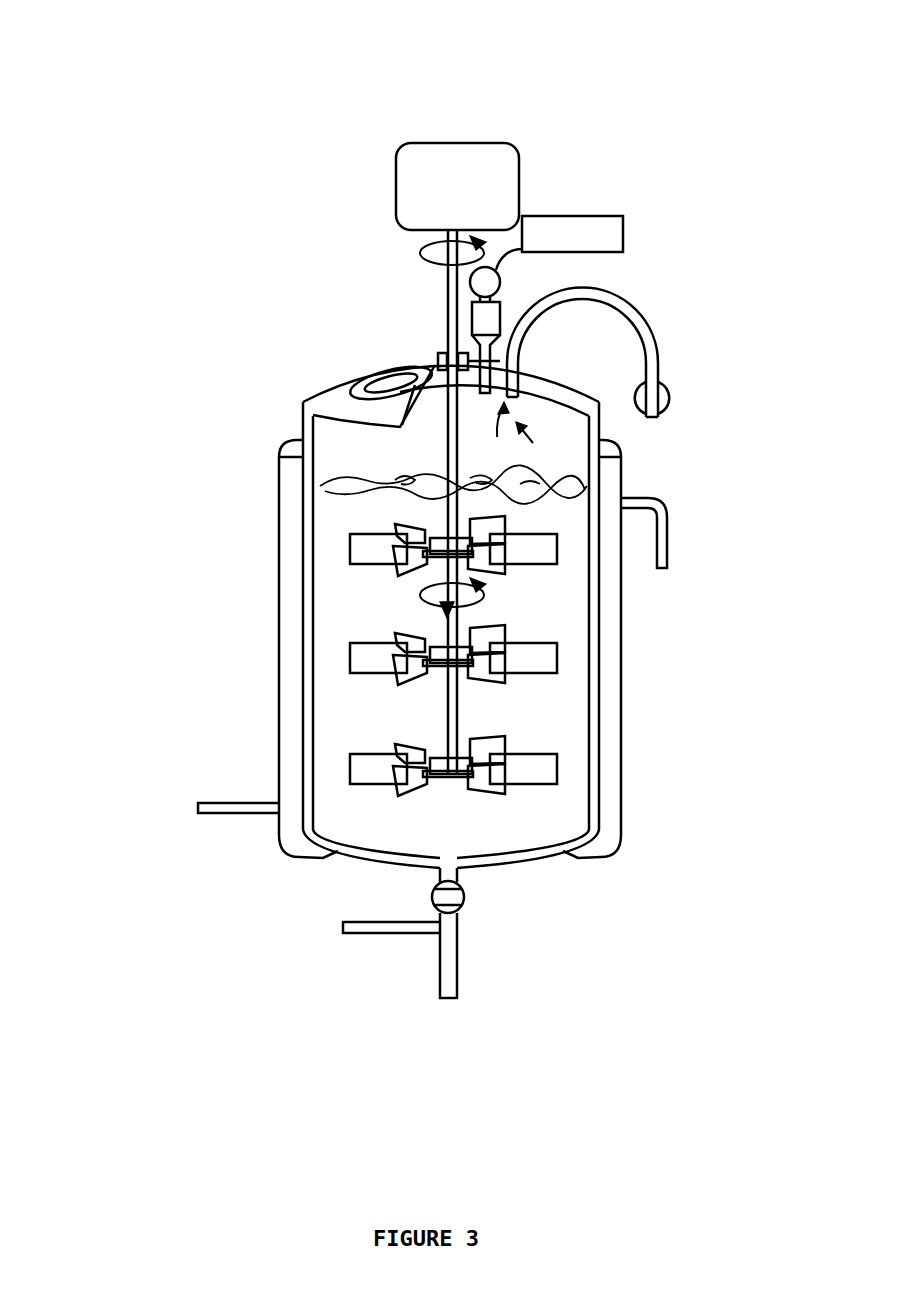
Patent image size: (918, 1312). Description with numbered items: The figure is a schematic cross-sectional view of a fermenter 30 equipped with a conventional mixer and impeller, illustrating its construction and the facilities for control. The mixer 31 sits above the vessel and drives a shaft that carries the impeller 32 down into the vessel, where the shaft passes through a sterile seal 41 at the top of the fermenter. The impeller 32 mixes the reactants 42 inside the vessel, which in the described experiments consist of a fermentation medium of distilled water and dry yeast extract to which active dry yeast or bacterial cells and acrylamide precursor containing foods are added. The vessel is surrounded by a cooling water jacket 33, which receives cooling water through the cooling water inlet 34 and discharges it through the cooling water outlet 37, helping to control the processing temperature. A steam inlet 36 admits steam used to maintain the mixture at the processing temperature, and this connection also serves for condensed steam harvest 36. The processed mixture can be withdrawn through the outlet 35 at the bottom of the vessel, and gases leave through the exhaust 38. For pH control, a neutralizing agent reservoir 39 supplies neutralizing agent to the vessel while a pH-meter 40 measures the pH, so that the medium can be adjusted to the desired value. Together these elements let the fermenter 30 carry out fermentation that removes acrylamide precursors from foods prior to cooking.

The fermenter 30 is at (665, 108).
The mixer 31 is at (485, 180).
The impeller 32 is at (377, 550).
The cooling water jacket 33 is at (288, 672).
The cooling water inlet 34 is at (182, 812).
The outlet 35 is at (448, 1015).
The steam inlet 36 is at (322, 933).
The cooling water outlet 37 is at (656, 582).
The exhaust 38 is at (656, 432).
The neutralizing agent reservoir 39 is at (505, 298).
The pH-meter 40 is at (588, 232).
The sterile seal 41 is at (430, 355).
The reactants 42 is at (515, 703).